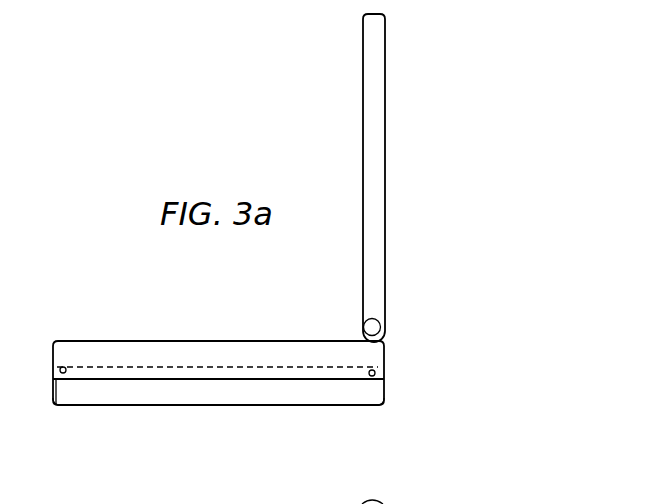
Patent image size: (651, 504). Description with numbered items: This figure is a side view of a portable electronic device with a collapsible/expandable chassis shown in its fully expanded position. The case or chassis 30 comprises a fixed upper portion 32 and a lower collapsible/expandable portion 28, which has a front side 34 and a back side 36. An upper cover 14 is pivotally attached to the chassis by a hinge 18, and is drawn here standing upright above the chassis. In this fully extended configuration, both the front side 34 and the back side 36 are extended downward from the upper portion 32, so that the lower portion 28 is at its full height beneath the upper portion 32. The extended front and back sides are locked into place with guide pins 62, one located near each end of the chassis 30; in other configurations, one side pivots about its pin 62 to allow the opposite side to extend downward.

The upper cover 14 is at (363, 173).
The hinge 18 is at (365, 324).
The collapsible/expandable portion 28 is at (218, 405).
The chassis 30 is at (45, 338).
The upper portion 32 is at (217, 343).
The front side 34 is at (55, 404).
The back side 36 is at (384, 405).
The guide pins 62 is at (64, 367).